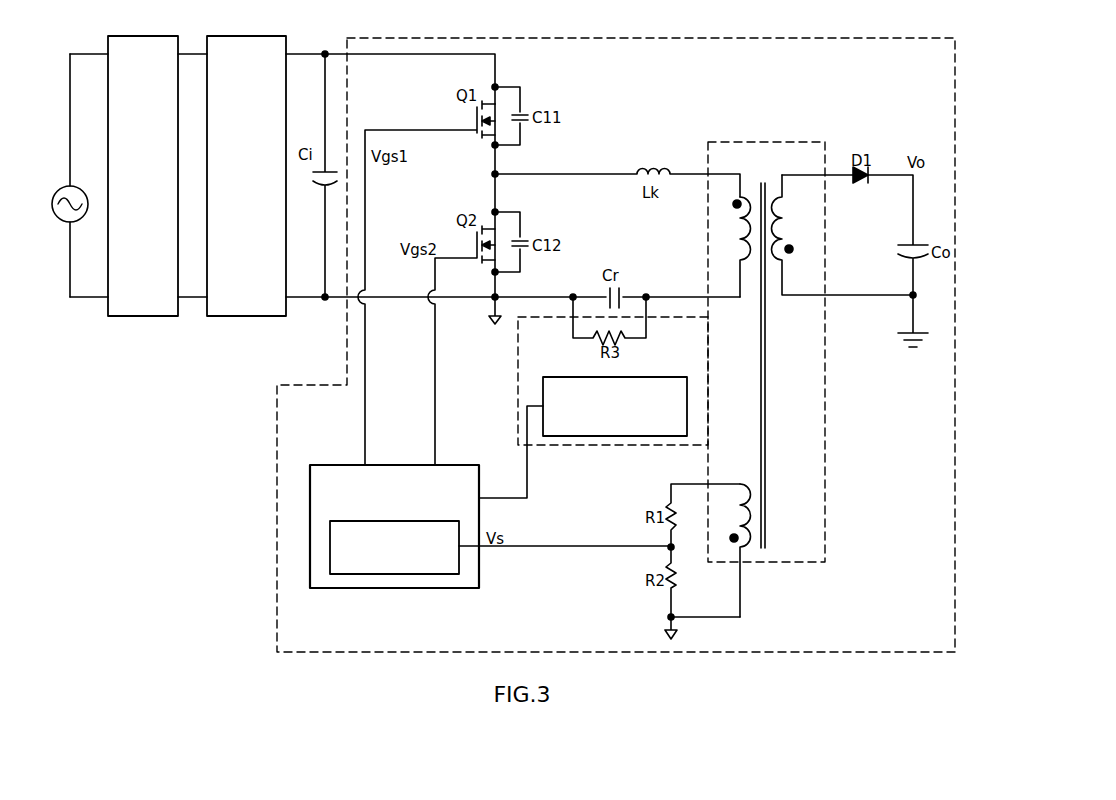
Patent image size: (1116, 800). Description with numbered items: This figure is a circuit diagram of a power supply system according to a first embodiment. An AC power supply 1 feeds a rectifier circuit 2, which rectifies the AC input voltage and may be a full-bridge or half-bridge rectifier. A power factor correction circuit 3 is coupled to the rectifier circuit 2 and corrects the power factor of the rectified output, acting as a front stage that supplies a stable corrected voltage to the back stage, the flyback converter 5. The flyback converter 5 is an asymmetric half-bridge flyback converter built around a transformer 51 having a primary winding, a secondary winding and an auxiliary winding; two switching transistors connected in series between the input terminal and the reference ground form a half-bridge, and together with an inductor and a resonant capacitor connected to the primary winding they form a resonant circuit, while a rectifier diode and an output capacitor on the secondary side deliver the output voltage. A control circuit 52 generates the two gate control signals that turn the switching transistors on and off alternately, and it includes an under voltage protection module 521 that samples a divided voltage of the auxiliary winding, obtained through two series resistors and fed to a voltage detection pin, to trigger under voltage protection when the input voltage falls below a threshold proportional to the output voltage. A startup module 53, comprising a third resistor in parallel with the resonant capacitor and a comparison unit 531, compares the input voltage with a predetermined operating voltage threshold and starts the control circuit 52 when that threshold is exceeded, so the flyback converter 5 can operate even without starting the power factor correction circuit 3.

The AC power supply 1 is at (61, 192).
The rectifier circuit 2 is at (143, 176).
The power factor correction circuit 3 is at (246, 176).
The flyback converter 5 is at (584, 44).
The transformer 51 is at (757, 146).
The control circuit 52 is at (490, 497).
The under voltage protection module 521 is at (394, 547).
The startup module 53 is at (527, 363).
The comparison unit 531 is at (615, 406).